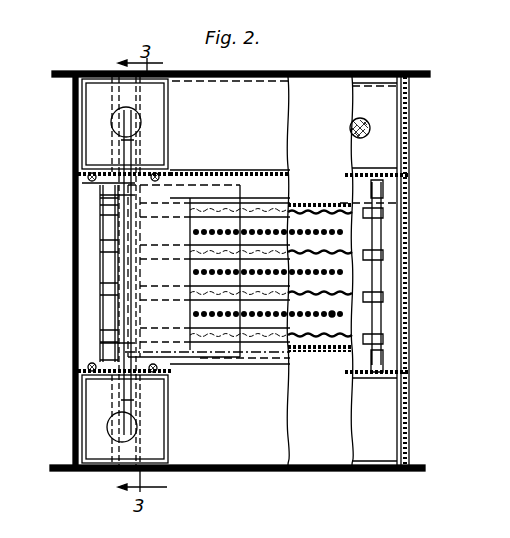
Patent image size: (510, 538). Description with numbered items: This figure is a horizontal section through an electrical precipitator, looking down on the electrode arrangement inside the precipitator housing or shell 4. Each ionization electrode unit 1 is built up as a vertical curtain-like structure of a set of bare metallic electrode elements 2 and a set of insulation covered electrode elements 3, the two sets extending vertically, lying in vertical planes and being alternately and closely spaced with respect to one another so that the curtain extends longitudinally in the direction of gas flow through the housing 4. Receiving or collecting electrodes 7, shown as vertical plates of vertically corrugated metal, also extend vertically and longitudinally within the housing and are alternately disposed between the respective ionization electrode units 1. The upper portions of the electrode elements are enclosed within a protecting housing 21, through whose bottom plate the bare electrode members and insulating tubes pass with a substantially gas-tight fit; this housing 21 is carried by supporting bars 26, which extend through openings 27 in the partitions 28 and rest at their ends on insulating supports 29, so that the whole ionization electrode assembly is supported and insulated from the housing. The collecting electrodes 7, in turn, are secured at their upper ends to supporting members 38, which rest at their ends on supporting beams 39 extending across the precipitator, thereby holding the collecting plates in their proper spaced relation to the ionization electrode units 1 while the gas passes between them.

The ionization electrode unit 1 is at (322, 212).
The bare metallic electrode element 2 is at (322, 316).
The insulation covered electrode element 3 is at (335, 315).
The precipitator housing 4 is at (345, 342).
The receiving electrode 7 is at (345, 264).
The protecting housing 21 is at (157, 311).
The supporting bar 26 is at (110, 244).
The opening 27 is at (95, 180).
The partition 28 is at (215, 172).
The insulating support 29 is at (113, 125).
The supporting member 38 is at (275, 206).
The supporting beam 39 is at (105, 271).